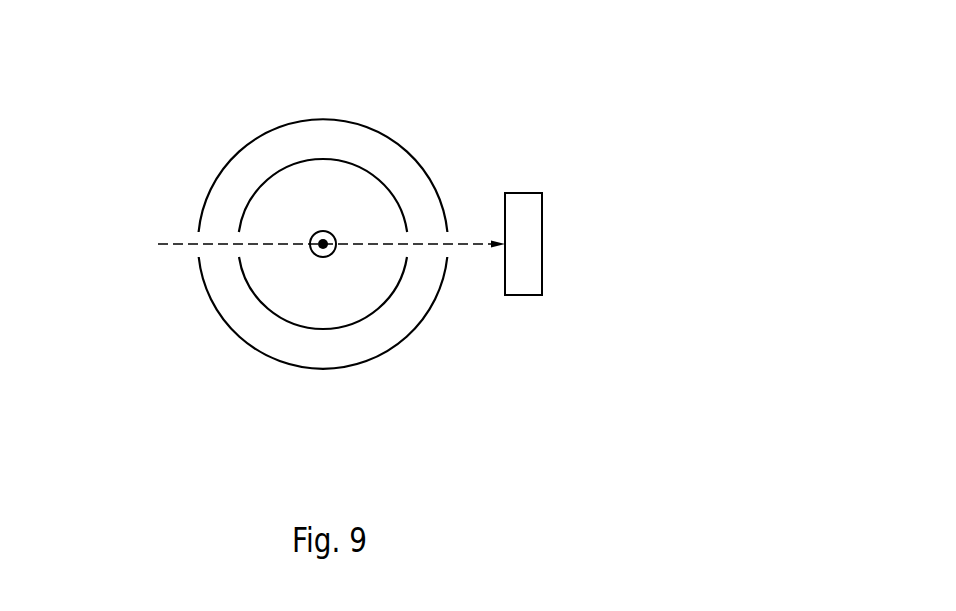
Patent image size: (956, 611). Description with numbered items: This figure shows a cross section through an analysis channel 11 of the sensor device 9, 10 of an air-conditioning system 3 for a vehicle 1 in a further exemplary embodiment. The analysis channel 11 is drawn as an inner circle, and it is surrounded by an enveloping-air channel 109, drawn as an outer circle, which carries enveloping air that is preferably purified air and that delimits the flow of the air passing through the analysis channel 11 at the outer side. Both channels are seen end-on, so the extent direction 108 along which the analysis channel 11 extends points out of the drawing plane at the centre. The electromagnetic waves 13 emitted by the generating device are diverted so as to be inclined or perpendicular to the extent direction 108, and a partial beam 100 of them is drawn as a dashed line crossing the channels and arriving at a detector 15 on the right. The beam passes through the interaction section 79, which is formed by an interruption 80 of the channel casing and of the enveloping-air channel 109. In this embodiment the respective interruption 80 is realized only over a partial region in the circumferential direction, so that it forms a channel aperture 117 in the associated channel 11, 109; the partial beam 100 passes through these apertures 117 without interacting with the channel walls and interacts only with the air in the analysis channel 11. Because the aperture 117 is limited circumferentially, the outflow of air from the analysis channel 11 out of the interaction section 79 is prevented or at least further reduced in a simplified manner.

The vehicle 1 is at (614, 115).
The air-conditioning system 3 is at (607, 178).
The sensor device 9 is at (155, 102).
The rotation sensor 10 is at (82, 33).
The analysis channel 11 is at (260, 167).
The electromagnetic waves 13 is at (467, 247).
The detector 15 is at (525, 242).
The interaction section 79 is at (184, 254).
The interruption 80 is at (237, 240).
The partial beam 100 is at (497, 328).
The extent direction 108 is at (323, 257).
The enveloping-air channel 109 is at (398, 125).
The aperture 117 is at (154, 172).